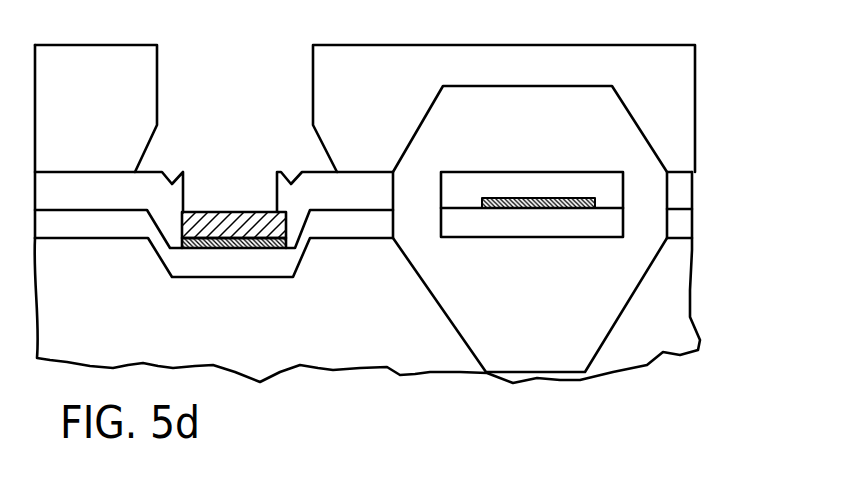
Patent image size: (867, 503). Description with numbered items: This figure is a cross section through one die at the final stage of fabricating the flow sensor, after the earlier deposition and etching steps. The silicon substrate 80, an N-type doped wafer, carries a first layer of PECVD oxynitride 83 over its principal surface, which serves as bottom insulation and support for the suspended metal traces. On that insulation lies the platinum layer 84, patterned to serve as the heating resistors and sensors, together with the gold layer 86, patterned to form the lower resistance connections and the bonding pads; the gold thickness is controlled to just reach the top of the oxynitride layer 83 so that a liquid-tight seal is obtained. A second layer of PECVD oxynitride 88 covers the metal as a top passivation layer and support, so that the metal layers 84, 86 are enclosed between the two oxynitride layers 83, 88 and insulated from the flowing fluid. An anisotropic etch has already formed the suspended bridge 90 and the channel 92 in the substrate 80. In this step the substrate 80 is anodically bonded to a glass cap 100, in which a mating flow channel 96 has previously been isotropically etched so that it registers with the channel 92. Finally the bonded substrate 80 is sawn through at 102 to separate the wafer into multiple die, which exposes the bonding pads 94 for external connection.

The silicon substrate 80 is at (406, 336).
The PECVD oxynitride layer 83 is at (65, 223).
The platinum layer 84 is at (250, 249).
The gold layer 86 is at (267, 244).
The second PECVD oxynitride layer 88 is at (151, 181).
The bridge 90 is at (432, 213).
The channel 92 is at (553, 316).
The bonding pads 94 is at (232, 196).
The mating flow channel 96 is at (488, 136).
The glass cap 100 is at (123, 53).
The saw cut location 102 is at (305, 95).